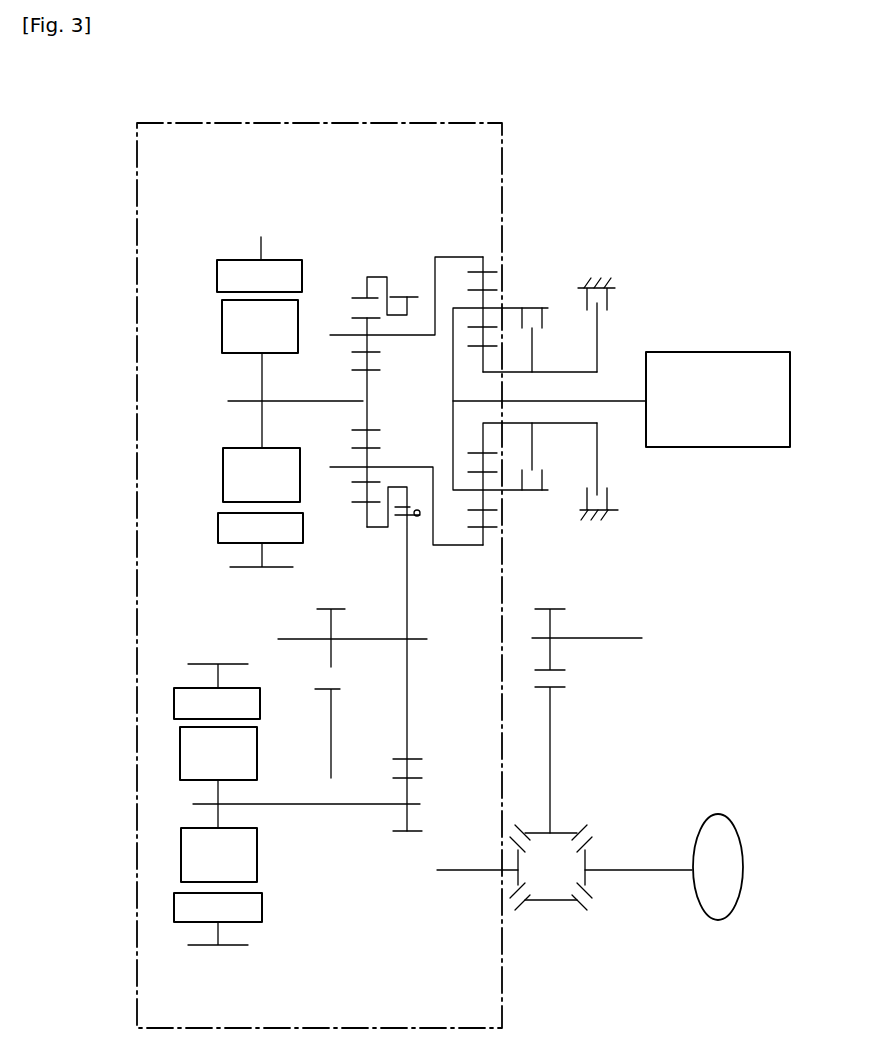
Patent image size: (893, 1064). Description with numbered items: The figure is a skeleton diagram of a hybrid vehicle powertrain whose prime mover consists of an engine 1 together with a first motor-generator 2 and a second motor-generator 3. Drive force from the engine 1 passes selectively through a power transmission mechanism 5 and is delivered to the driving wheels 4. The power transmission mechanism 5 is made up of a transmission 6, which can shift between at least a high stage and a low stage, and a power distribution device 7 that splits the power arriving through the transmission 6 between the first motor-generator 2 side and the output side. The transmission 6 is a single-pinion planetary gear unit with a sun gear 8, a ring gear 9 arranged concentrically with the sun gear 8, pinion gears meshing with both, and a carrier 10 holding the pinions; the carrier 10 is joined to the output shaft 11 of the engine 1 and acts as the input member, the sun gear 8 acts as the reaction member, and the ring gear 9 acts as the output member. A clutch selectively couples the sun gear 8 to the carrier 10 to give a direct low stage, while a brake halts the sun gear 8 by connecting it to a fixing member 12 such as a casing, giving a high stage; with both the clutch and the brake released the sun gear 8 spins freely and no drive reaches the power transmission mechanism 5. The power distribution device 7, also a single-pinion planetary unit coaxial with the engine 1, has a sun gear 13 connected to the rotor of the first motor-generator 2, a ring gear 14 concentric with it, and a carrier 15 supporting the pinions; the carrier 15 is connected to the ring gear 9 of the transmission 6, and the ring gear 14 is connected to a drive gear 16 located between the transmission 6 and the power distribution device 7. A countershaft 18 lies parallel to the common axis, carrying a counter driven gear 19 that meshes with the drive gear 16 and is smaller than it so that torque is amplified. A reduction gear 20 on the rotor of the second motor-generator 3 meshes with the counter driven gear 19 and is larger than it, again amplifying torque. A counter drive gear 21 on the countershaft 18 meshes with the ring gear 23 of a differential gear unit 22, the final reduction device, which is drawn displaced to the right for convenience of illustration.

The engine 1 is at (715, 350).
The first motor-generator 2 is at (203, 333).
The second motor-generator 3 is at (158, 868).
The driving wheels 4 is at (718, 813).
The power transmission mechanism 5 is at (331, 121).
The transmission 6 is at (463, 348).
The power distribution device 7 is at (342, 229).
The sun gear 8 is at (459, 452).
The ring gear 9 is at (488, 277).
The carrier 10 is at (462, 303).
The output shaft 11 is at (628, 399).
The fixing member 12 is at (595, 278).
The sun gear 13 is at (372, 372).
The ring gear 14 is at (352, 298).
The carrier 15 is at (402, 337).
The drive gear 16 is at (407, 296).
The countershaft 18 is at (414, 640).
The counter driven gear 19 is at (420, 516).
The reduction gear 20 is at (405, 833).
The counter drive gear 21 is at (333, 607).
The differential gear unit 22 is at (491, 911).
The ring gear 23 is at (338, 689).